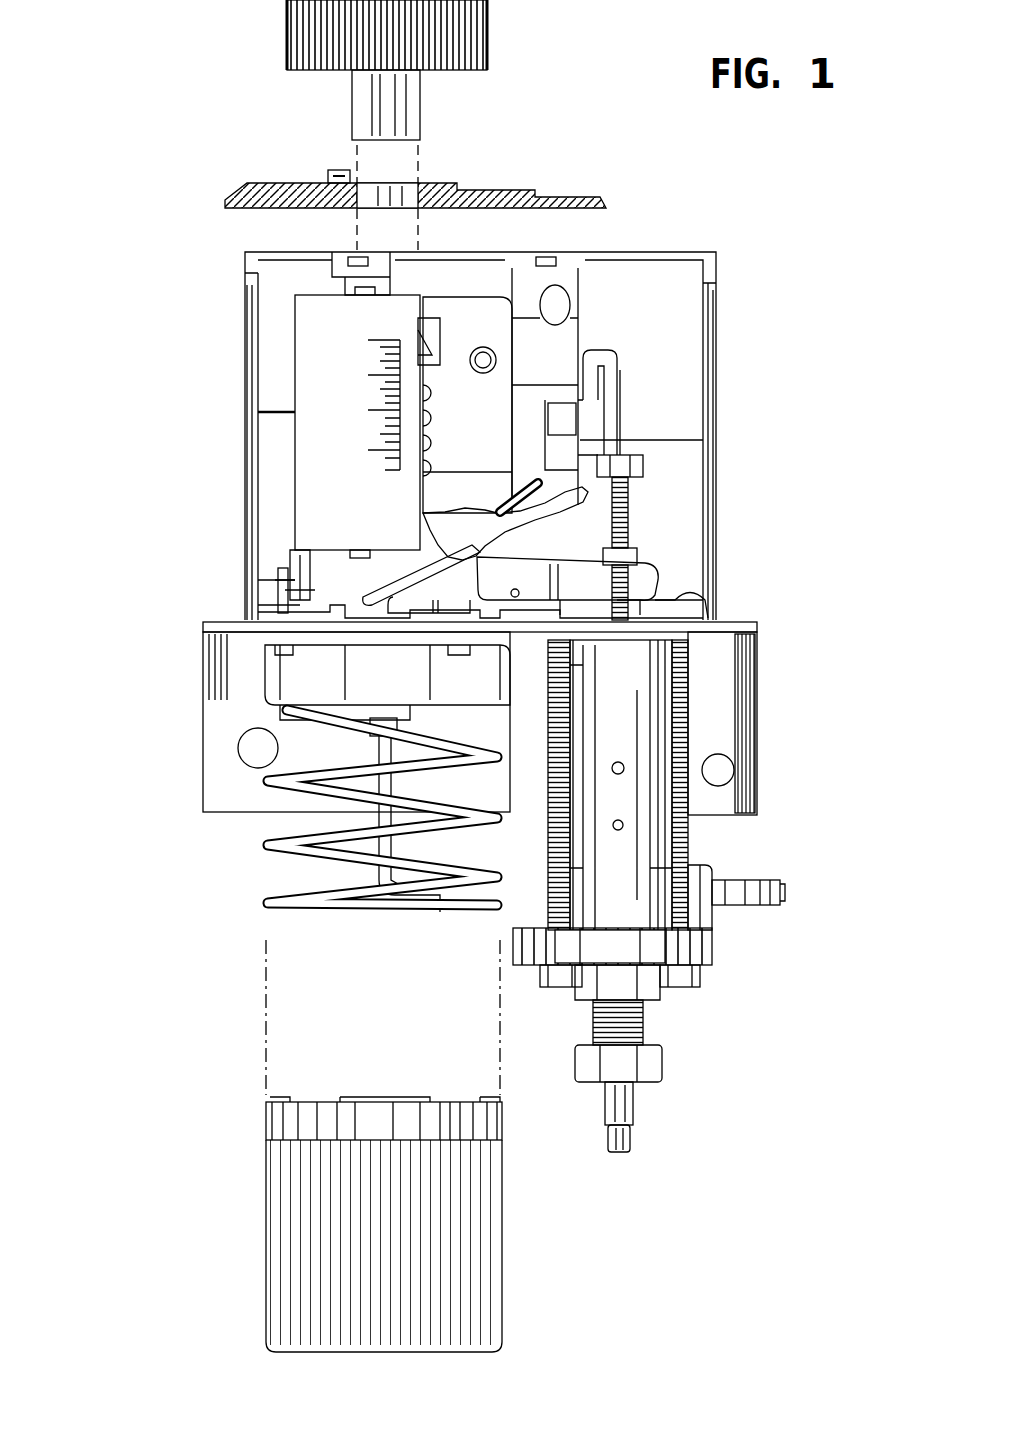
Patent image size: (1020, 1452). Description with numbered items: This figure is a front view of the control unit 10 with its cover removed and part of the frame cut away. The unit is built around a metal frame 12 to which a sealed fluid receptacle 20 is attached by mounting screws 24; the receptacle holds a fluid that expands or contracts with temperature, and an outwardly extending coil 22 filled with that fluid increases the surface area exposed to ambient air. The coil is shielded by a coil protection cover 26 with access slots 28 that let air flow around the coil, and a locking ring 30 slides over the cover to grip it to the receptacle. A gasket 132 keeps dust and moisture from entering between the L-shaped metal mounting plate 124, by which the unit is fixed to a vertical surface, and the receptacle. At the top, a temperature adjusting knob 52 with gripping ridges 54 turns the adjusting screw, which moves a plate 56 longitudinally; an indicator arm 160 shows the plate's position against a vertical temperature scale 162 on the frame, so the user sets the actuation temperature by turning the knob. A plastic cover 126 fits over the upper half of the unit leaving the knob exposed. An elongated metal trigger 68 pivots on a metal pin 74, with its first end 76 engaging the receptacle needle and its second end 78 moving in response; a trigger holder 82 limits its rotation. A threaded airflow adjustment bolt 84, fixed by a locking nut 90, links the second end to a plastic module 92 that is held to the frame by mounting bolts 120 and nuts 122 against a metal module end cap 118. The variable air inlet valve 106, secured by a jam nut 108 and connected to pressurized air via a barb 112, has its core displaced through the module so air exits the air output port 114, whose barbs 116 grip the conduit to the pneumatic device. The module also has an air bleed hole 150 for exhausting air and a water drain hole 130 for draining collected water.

The control unit 10 is at (160, 143).
The metal frame 12 is at (245, 624).
The fluid receptacle 20 is at (262, 740).
The coil 22 is at (268, 845).
The mounting screws 24 is at (280, 680).
The coil protection cover 26 is at (266, 1238).
The access slots 28 is at (367, 1300).
The locking ring 30 is at (266, 1115).
The temperature adjusting knob 52 is at (487, 32).
The ridges 54 is at (452, 46).
The plate 56 is at (427, 332).
The trigger 68 is at (582, 560).
The metal pin 74 is at (670, 576).
The first end 76 is at (312, 555).
The second end 78 is at (655, 566).
The trigger holder 82 is at (292, 603).
The airflow adjustment bolt 84 is at (643, 466).
The locking nut 90 is at (633, 550).
The module 92 is at (630, 710).
The variable air inlet valve 106 is at (660, 1078).
The jam nut 108 is at (650, 1002).
The barb 112 is at (632, 1128).
The air output port 114 is at (780, 888).
The barbs 116 is at (760, 906).
The module end cap 118 is at (712, 952).
The mounting bolts 120 is at (688, 675).
The nuts 122 is at (545, 990).
The L-shaped metal mounting plate 124 is at (203, 653).
The plastic cover 126 is at (298, 185).
The water drain hole 130 is at (623, 825).
The gasket 132 is at (270, 652).
The air bleed hole 150 is at (620, 762).
The indicator arm 160 is at (440, 347).
The vertical temperature scale 162 is at (360, 385).